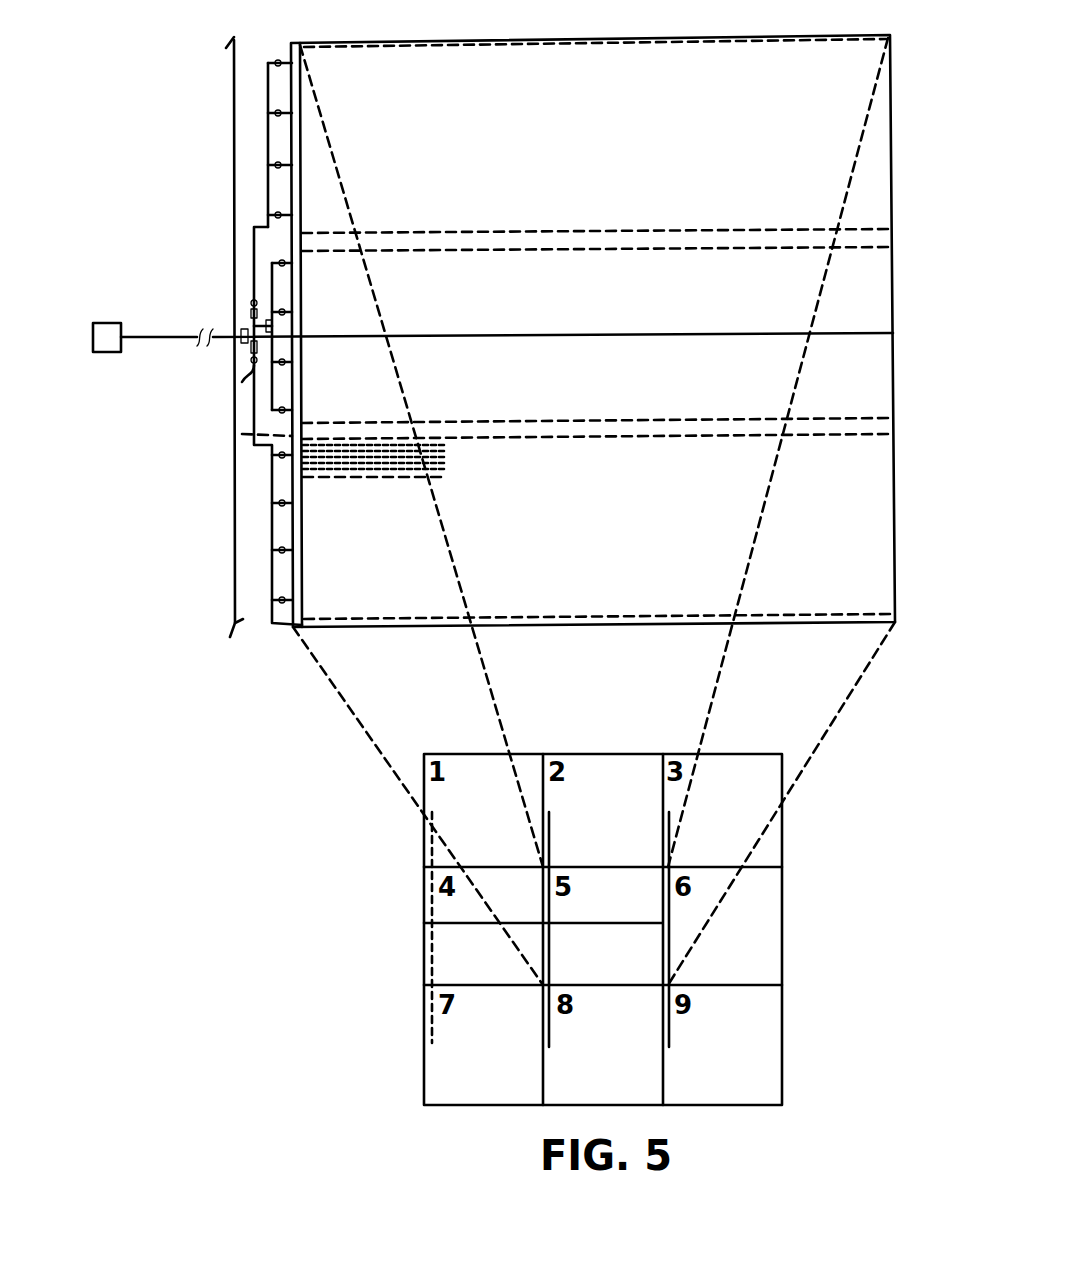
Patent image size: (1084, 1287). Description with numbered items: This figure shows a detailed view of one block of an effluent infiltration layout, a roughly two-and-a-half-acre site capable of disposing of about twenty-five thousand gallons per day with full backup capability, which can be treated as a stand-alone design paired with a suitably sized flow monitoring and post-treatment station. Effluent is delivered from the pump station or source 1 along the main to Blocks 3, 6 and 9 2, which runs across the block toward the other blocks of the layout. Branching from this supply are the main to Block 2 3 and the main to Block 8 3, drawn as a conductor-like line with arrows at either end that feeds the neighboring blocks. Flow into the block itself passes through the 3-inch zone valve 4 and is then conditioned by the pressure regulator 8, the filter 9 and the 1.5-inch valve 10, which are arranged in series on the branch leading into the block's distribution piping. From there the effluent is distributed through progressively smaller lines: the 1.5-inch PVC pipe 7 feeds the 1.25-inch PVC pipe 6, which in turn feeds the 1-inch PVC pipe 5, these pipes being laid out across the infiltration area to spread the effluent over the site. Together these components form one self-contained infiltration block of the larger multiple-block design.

The pump station or source 1 is at (108, 322).
The main to Blocks 3, 6 and 9 2 is at (608, 334).
The main to Block 2 / main to Block 8 3 is at (234, 265).
The 3-inch zone valve 4 is at (242, 382).
The 1-inch PVC pipe 5 is at (268, 176).
The 1.25-inch PVC pipe 6 is at (265, 190).
The 1.5-inch PVC pipe 7 is at (251, 226).
The pressure regulator 8 is at (276, 262).
The filter 9 is at (252, 301).
The 1.5-inch valve 10 is at (251, 316).